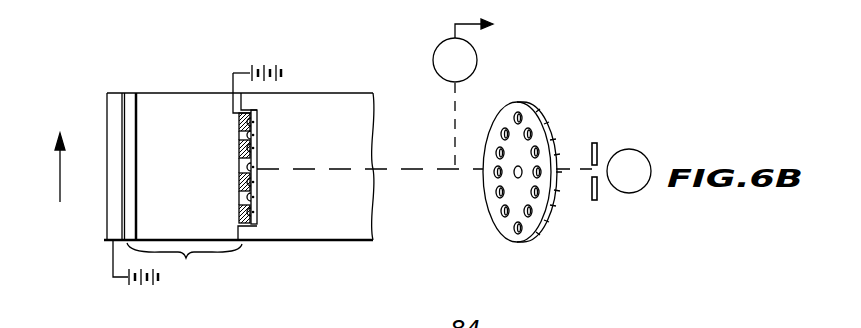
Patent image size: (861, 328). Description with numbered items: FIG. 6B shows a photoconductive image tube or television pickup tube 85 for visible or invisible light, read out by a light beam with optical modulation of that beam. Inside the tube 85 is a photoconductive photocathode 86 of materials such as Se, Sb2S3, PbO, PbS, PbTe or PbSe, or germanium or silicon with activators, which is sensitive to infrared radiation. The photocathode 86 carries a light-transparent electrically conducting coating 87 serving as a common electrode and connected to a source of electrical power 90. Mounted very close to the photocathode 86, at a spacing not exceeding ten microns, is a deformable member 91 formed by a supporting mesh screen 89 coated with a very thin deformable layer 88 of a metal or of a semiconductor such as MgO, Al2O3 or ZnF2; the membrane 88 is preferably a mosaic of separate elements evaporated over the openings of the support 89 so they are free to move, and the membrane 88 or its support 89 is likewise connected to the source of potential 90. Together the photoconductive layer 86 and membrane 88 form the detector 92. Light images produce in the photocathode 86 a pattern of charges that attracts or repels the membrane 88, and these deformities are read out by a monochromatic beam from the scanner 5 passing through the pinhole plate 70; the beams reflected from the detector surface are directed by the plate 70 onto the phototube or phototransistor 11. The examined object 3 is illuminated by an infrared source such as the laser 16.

The examined object 3 is at (60, 183).
The scanner 5 is at (530, 228).
The phototube or phototransistor 11 is at (465, 51).
The laser 16 is at (630, 183).
The pinhole plate 70 is at (257, 236).
The image tube 85 is at (318, 110).
The photoconductive photocathode 86 is at (133, 100).
The light-transparent electrically conducting coating 87 is at (110, 95).
The deformable layer 88 is at (248, 222).
The supporting mesh screen 89 is at (259, 200).
The source of electrical power 90 is at (262, 68).
The deformable member 91 is at (231, 130).
The detector 92 is at (184, 265).